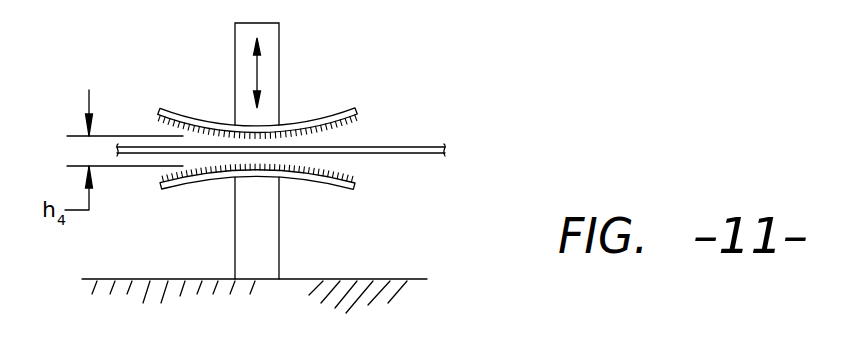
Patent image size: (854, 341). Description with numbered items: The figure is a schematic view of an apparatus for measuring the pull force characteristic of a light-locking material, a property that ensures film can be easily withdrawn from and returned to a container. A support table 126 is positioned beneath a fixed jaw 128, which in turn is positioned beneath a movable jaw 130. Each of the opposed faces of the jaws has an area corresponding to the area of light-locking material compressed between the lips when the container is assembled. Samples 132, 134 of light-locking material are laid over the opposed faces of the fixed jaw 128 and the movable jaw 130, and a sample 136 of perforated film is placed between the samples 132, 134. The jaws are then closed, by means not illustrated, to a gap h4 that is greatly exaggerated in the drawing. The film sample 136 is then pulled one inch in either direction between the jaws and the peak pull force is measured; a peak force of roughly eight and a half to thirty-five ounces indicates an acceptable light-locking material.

The support table 126 is at (385, 279).
The fixed jaw 128 is at (279, 212).
The movable jaw 130 is at (279, 62).
The sample of light-locking material 132 is at (343, 110).
The sample of light-locking material 134 is at (348, 195).
The sample of perforated film 136 is at (408, 147).